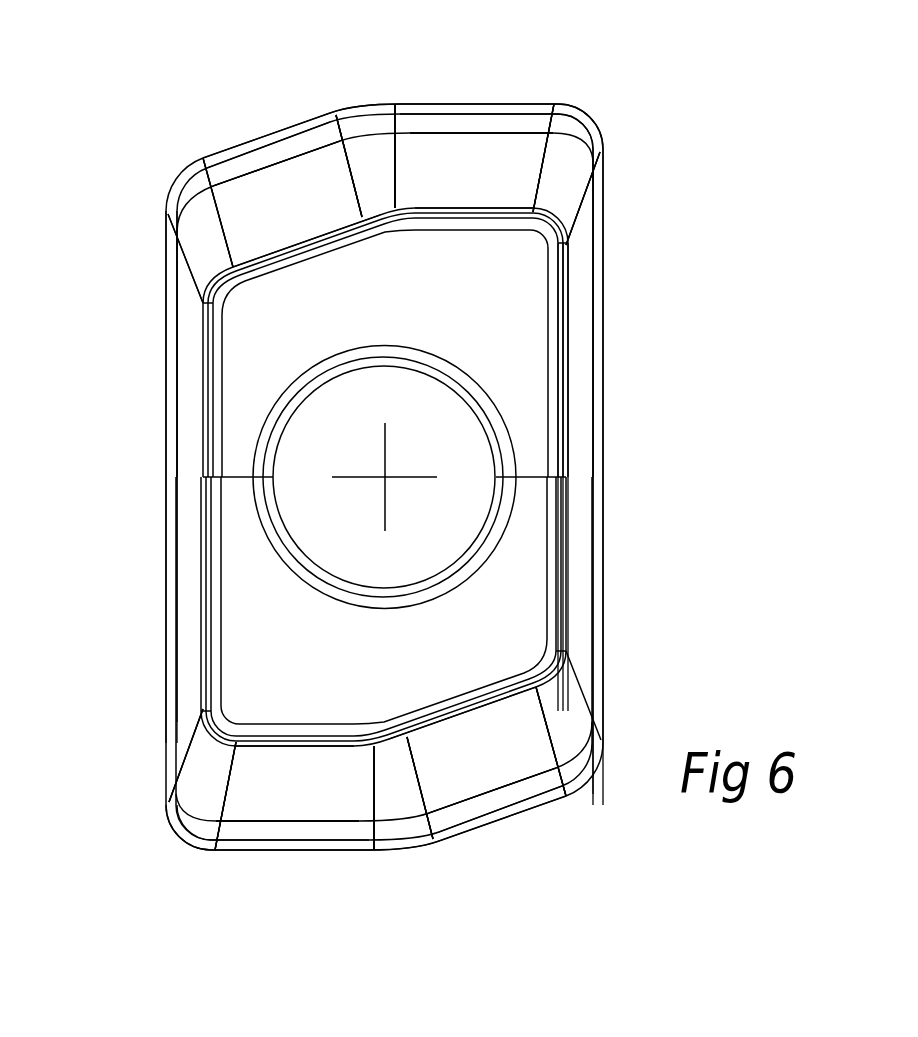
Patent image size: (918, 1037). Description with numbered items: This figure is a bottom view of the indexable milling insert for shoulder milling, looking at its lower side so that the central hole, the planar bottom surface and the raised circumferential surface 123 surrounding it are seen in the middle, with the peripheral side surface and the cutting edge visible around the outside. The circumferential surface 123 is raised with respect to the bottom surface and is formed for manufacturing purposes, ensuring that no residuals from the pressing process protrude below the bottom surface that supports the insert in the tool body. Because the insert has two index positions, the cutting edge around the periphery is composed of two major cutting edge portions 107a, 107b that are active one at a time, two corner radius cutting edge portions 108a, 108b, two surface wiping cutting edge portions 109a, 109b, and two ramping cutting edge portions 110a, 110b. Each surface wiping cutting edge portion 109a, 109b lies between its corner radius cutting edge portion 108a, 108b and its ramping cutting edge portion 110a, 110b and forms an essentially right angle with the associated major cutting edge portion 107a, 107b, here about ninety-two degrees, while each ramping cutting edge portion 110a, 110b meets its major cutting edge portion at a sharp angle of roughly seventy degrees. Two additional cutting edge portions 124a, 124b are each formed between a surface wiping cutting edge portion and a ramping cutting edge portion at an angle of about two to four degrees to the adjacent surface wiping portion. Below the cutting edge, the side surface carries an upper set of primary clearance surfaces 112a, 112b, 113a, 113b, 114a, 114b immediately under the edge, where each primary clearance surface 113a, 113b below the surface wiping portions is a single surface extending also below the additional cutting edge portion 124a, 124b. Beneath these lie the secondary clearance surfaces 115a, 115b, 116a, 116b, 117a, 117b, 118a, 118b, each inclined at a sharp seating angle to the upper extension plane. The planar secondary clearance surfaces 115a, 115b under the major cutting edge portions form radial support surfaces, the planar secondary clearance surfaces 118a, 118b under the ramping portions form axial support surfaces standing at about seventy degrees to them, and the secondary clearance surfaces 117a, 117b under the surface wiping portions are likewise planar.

The major cutting edge portion 107a is at (604, 327).
The major cutting edge portion 107b is at (167, 455).
The corner radius cutting edge portion 108a is at (578, 112).
The corner radius cutting edge portion 108b is at (186, 836).
The surface wiping cutting edge portion 109a is at (483, 100).
The surface wiping cutting edge portion 109b is at (273, 853).
The ramping cutting edge portion 110a is at (279, 130).
The ramping cutting edge portion 110b is at (473, 827).
The primary clearance surface 112a is at (576, 104).
The primary clearance surface 112b is at (197, 843).
The primary clearance surface 113a is at (420, 106).
The primary clearance surface 113b is at (353, 843).
The primary clearance surface 114a is at (247, 150).
The primary clearance surface 114b is at (537, 795).
The secondary clearance surface 115a is at (578, 515).
The secondary clearance surface 115b is at (173, 568).
The secondary clearance surface 116a is at (572, 168).
The secondary clearance surface 116b is at (205, 757).
The secondary clearance surface 117a is at (478, 175).
The secondary clearance surface 117b is at (270, 786).
The secondary clearance surface 118a is at (268, 214).
The secondary clearance surface 118b is at (513, 727).
The circumferential surface 123 is at (556, 433).
The additional cutting edge portion 124a is at (433, 103).
The additional cutting edge portion 124b is at (313, 852).